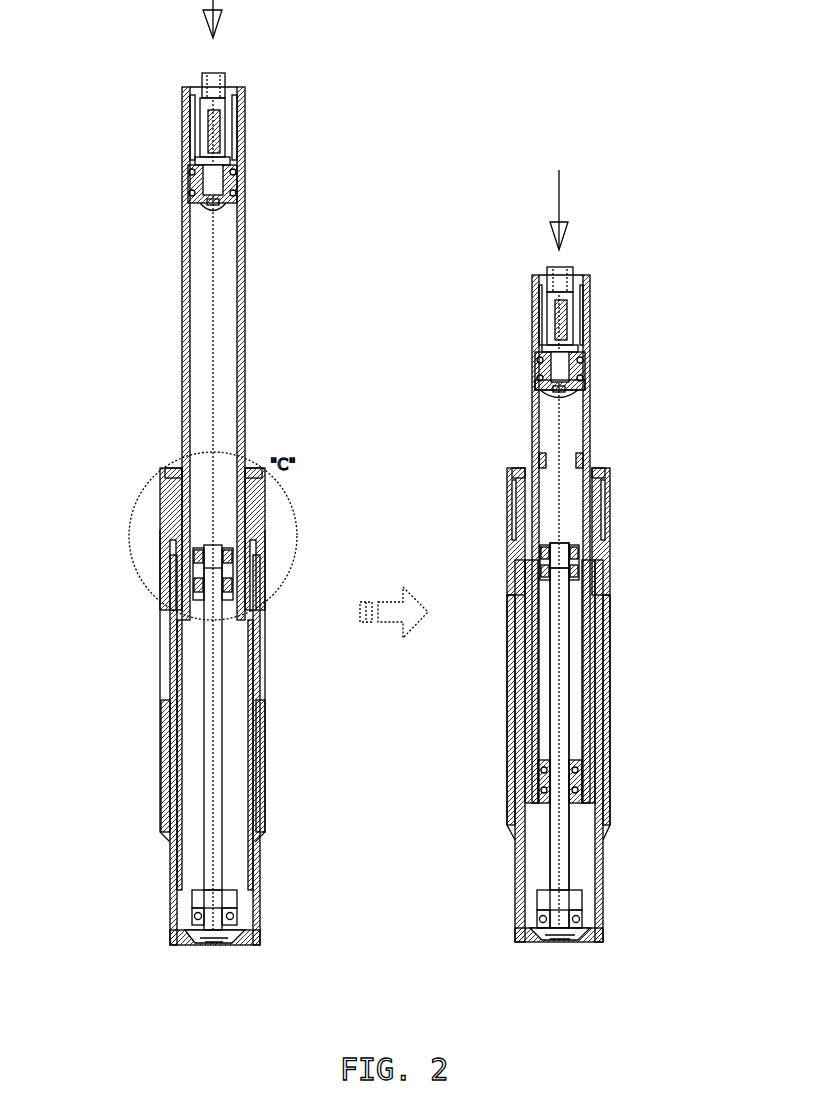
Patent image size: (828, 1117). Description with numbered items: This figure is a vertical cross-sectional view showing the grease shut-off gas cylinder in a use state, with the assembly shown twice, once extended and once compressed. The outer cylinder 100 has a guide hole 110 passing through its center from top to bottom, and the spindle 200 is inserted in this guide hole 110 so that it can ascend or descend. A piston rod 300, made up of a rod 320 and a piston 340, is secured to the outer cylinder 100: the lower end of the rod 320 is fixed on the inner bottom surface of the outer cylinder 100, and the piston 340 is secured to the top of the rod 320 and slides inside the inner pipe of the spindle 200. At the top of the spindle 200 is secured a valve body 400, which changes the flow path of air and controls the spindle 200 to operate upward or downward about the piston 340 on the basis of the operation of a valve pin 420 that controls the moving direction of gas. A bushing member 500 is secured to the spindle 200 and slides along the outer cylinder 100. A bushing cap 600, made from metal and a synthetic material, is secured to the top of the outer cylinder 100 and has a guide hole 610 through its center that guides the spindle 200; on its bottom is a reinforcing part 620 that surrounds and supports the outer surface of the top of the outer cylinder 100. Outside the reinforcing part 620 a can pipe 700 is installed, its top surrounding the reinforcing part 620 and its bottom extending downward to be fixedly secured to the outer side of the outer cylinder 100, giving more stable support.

The outer cylinder 100 is at (172, 668).
The guide hole 110 is at (190, 736).
The spindle 200 is at (182, 362).
The piston rod 300 is at (681, 565).
The rod 320 is at (226, 722).
The piston 340 is at (240, 553).
The valve body 400 is at (246, 172).
The valve pin 420 is at (590, 378).
The bushing member 500 is at (172, 556).
The bushing cap 600 is at (170, 468).
The guide hole 610 is at (530, 447).
The reinforcing part 620 is at (170, 492).
The can pipe 700 is at (160, 623).